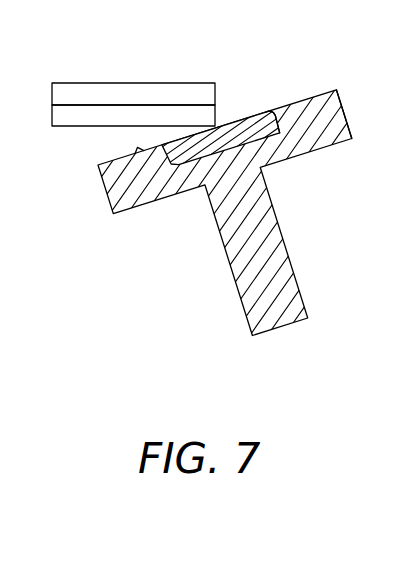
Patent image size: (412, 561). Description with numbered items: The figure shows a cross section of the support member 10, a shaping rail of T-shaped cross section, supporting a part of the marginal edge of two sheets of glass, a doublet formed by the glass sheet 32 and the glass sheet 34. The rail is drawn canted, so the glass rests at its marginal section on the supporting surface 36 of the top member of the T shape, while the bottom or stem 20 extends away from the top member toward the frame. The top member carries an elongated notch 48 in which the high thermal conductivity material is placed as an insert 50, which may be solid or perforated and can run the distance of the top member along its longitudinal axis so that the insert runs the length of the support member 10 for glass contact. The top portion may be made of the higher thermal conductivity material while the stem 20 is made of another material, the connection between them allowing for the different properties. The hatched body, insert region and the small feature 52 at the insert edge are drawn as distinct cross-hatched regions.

The support member 10 is at (206, 265).
The stem 20 is at (275, 216).
The glass sheet 32 is at (102, 92).
The glass sheet 34 is at (62, 118).
The supporting surface 36 is at (342, 108).
The elongated notch 48 is at (280, 110).
The insert 50 is at (232, 124).
The fillet of bonding layer 52 is at (140, 154).